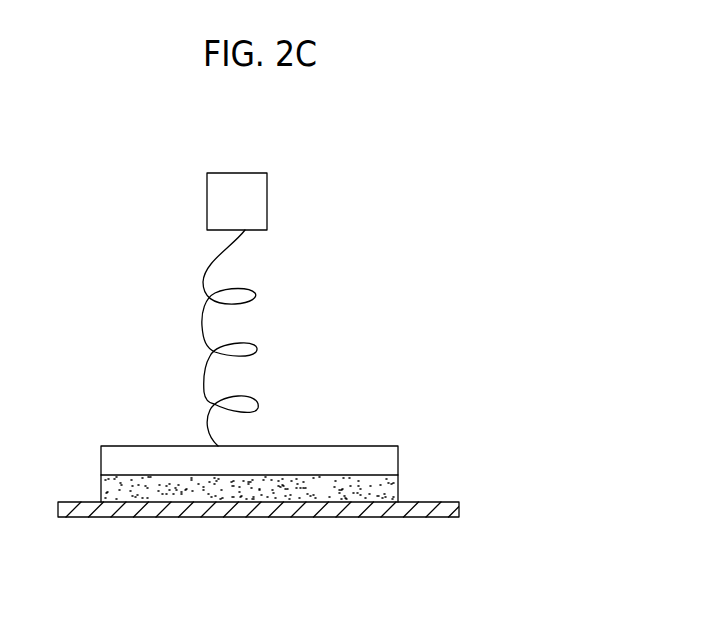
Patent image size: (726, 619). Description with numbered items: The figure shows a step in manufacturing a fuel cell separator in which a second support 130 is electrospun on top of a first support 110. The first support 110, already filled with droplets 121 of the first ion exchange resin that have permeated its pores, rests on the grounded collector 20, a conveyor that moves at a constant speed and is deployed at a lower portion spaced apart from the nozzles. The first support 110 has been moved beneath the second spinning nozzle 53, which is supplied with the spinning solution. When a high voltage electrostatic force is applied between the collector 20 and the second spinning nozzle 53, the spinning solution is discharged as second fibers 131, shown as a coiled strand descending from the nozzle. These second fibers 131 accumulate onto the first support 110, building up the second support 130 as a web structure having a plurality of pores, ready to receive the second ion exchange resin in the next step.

The second spinning nozzle 53 is at (258, 200).
The second fibers 131 is at (257, 352).
The second support 130 is at (383, 457).
The first support 110 is at (391, 487).
The droplets of the first ion exchange resin 121 is at (184, 488).
The collector 20 is at (285, 507).